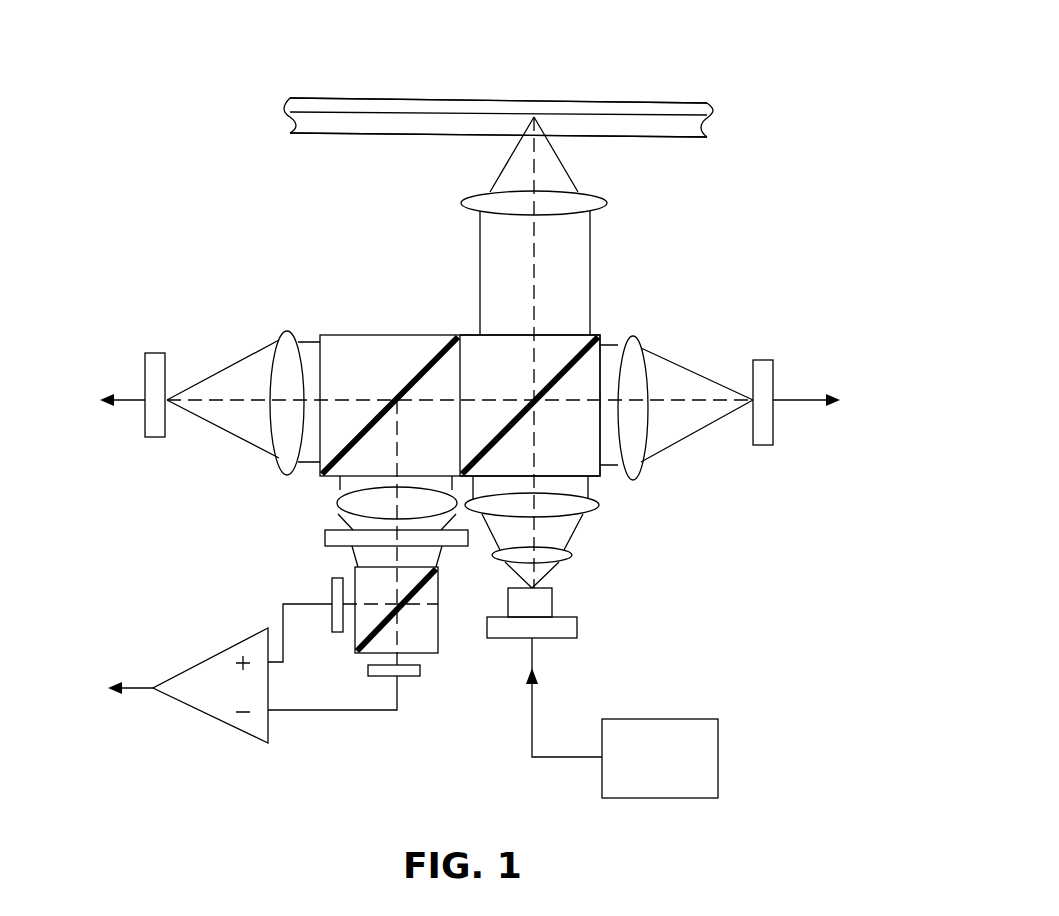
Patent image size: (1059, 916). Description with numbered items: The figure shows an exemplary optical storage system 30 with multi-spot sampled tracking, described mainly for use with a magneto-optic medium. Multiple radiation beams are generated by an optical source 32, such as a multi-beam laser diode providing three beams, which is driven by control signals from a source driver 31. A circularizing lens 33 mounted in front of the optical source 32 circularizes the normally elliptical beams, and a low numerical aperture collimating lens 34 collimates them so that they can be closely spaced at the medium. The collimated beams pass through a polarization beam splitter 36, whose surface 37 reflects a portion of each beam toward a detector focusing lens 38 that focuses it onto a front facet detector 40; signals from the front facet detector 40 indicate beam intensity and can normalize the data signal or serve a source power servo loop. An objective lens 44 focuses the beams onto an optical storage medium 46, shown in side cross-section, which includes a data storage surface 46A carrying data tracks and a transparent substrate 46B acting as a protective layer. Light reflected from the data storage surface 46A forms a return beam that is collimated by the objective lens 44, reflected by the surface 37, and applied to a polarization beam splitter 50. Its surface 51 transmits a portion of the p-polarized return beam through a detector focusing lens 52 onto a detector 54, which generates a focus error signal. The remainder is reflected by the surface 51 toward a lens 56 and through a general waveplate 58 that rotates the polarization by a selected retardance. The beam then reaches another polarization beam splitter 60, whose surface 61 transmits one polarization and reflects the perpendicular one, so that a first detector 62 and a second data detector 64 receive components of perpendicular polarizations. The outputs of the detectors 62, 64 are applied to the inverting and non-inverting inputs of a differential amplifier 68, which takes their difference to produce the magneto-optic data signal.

The optical storage system 30 is at (148, 219).
The source driver 31 is at (718, 750).
The optical source 32 is at (555, 605).
The circularizing lens 33 is at (572, 555).
The collimating lens 34 is at (599, 505).
The polarization beam splitter 36 is at (543, 335).
The surface 37 is at (501, 437).
The detector focusing lens 38 is at (636, 337).
The front facet detector 40 is at (775, 430).
The objective lens 44 is at (461, 203).
The optical storage medium 46 is at (701, 76).
The data storage surface 46A is at (350, 98).
The transparent substrate 46B is at (418, 135).
The polarization beam splitter 50 is at (352, 335).
The surface 51 is at (412, 383).
The detector focusing lens 52 is at (286, 331).
The detector 54 is at (143, 420).
The lens 56 is at (340, 503).
The general waveplate 58 is at (325, 537).
The polarization beam splitter 60 is at (355, 572).
The surface 61 is at (424, 586).
The first detector 62 is at (332, 622).
The second data detector 64 is at (420, 672).
The differential amplifier 68 is at (221, 652).